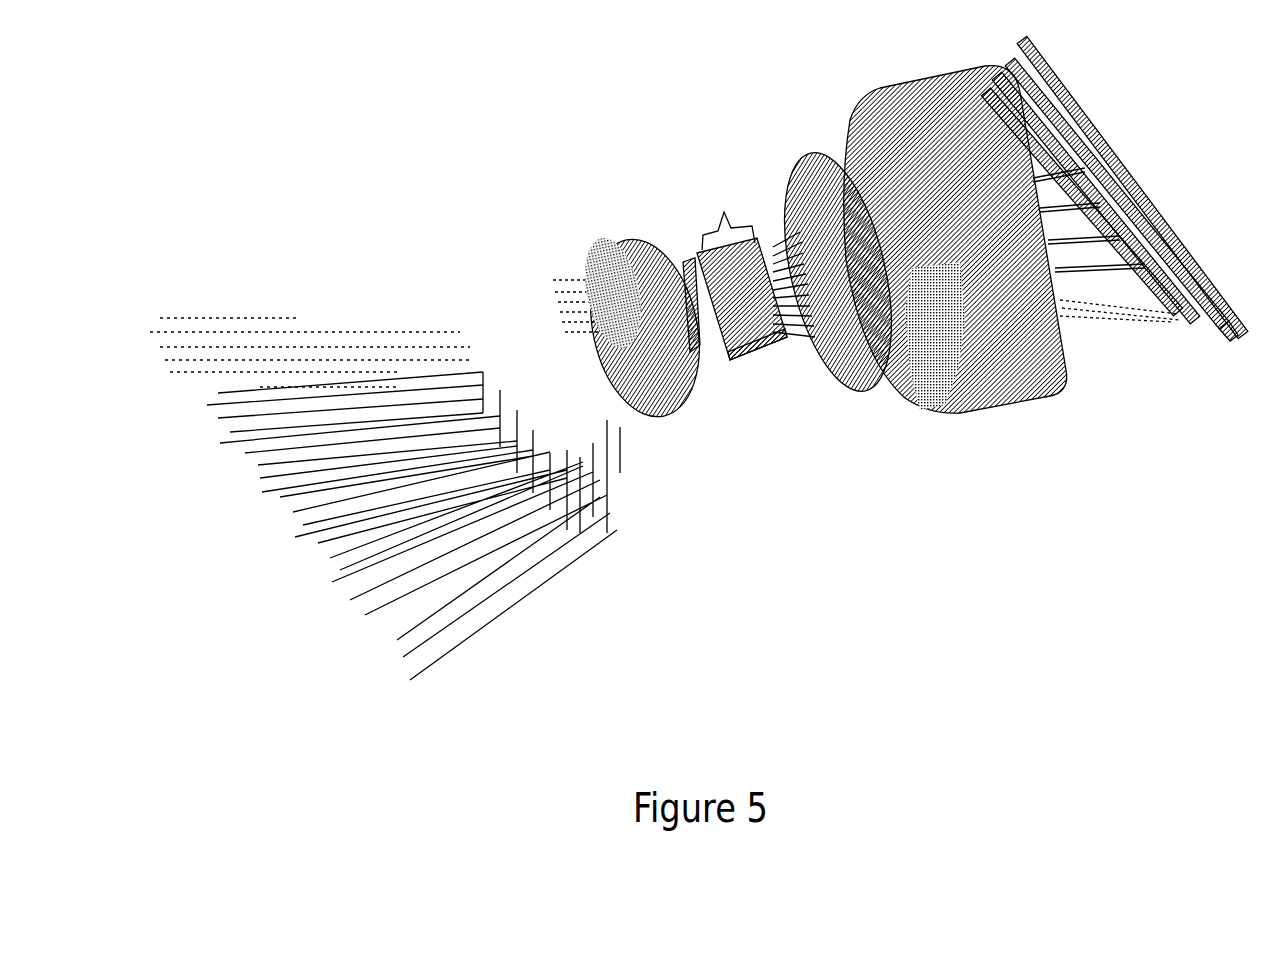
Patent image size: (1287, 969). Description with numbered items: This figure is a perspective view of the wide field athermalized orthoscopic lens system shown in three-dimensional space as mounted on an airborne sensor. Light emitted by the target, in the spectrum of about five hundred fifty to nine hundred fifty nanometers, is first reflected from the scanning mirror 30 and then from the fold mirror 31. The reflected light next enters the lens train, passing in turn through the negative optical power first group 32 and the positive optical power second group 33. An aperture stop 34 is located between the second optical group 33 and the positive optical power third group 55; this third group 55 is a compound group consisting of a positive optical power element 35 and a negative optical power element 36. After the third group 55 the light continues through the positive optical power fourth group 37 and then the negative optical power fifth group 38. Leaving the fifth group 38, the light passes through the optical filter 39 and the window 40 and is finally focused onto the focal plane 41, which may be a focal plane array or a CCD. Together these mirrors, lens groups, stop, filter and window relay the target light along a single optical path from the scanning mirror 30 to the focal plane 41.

The scanning mirror 30 is at (615, 568).
The fold mirror 31 is at (500, 306).
The negative optical power first group 32 is at (599, 277).
The positive optical power second group 33 is at (657, 247).
The aperture stop 34 is at (686, 266).
The positive optical power element 35 is at (713, 352).
The negative optical power element 36 is at (774, 362).
The positive optical power third group 55 is at (731, 200).
The positive optical power fourth group 37 is at (860, 393).
The negative optical power fifth group 38 is at (998, 402).
The optical filter 39 is at (1173, 329).
The window 40 is at (1219, 338).
The focal plane 41 is at (1179, 216).